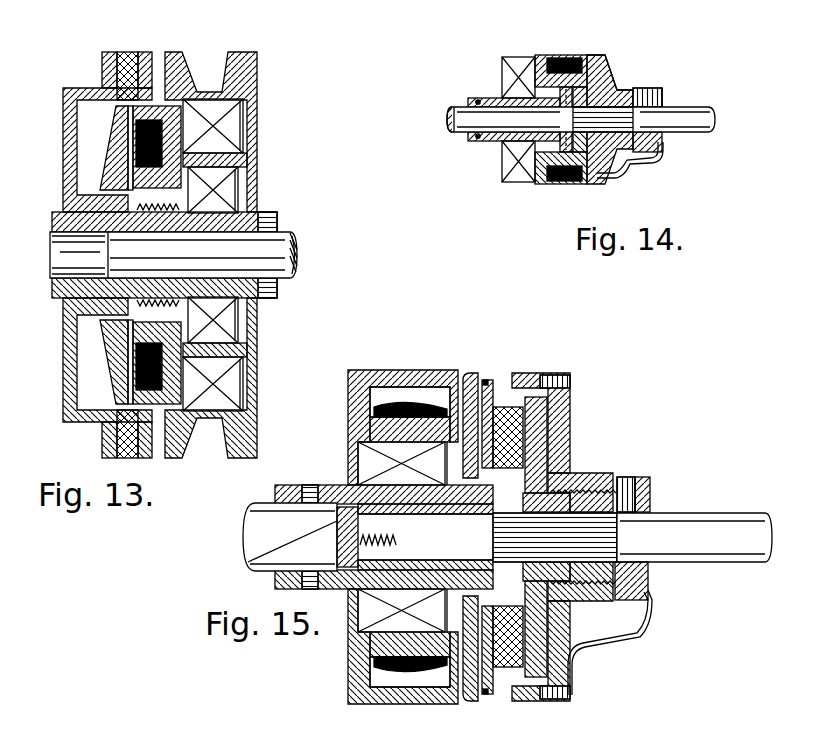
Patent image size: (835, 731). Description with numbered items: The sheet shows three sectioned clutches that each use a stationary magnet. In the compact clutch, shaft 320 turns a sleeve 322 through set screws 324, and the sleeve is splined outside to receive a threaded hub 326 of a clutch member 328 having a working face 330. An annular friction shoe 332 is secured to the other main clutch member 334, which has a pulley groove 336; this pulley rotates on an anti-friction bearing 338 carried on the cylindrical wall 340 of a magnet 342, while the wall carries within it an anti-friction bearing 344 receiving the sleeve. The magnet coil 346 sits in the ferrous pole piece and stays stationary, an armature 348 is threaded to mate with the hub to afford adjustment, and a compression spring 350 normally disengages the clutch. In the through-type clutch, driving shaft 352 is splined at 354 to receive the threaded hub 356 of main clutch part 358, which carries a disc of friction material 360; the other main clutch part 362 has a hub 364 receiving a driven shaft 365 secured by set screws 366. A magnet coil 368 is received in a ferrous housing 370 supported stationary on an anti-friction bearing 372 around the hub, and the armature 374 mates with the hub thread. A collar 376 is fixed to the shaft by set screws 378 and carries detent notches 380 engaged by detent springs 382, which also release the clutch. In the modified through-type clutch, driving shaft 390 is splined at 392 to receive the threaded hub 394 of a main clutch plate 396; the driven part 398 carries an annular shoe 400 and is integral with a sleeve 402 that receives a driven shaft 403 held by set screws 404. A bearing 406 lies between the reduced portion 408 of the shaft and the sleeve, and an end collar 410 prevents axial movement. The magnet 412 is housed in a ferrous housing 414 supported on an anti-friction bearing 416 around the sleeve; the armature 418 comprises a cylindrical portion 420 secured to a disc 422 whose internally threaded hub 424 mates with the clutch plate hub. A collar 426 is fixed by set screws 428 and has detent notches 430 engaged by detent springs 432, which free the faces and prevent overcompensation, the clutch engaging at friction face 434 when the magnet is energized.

In FIG. 13, the shaft 320 is at (290, 242).
In FIG. 13, the sleeve 322 is at (52, 232).
In FIG. 13, the set screws 324 is at (270, 212).
In FIG. 13, the threaded hub 326 is at (90, 205).
In FIG. 13, the clutch member 328 is at (63, 120).
In FIG. 13, the working face 330 is at (110, 52).
In FIG. 13, the annular friction shoe 332 is at (128, 52).
In FIG. 13, the main clutch member 334 is at (142, 54).
In FIG. 13, the pulley groove 336 is at (237, 52).
In FIG. 13, the anti-friction bearing 338 is at (233, 120).
In FIG. 13, the cylindrical wall 340 is at (205, 158).
In FIG. 13, the magnet 342 is at (165, 110).
In FIG. 13, the anti-friction bearing 344 is at (232, 190).
In FIG. 13, the magnet coil 346 is at (140, 130).
In FIG. 13, the armature 348 is at (108, 145).
In FIG. 13, the compression spring 350 is at (140, 215).
In FIG. 14, the driving shaft 352 is at (690, 128).
In FIG. 14, the splines 354 is at (612, 110).
In FIG. 14, the threaded hub 356 is at (610, 85).
In FIG. 14, the main clutch part 358 is at (545, 184).
In FIG. 14, the disc of friction material 360 is at (505, 137).
In FIG. 14, the main clutch part 362 is at (543, 58).
In FIG. 14, the hub 364 is at (490, 98).
In FIG. 14, the driven shaft 365 is at (450, 128).
In FIG. 14, the set screws 366 is at (473, 100).
In FIG. 14, the magnet coil 368 is at (530, 150).
In FIG. 14, the ferrous housing 370 is at (573, 184).
In FIG. 14, the anti-friction bearing 372 is at (502, 70).
In FIG. 14, the armature 374 is at (600, 56).
In FIG. 14, the collar 376 is at (645, 163).
In FIG. 14, the set screws 378 is at (652, 92).
In FIG. 14, the detent notches 380 is at (664, 90).
In FIG. 14, the detent springs 382 is at (622, 166).
In FIG. 15, the driving shaft 390 is at (715, 548).
In FIG. 15, the splines 392 is at (592, 530).
In FIG. 15, the threaded hub 394 is at (588, 492).
In FIG. 15, the main clutch plate 396 is at (540, 410).
In FIG. 15, the driven part 398 is at (488, 381).
In FIG. 15, the annular shoe 400 is at (500, 408).
In FIG. 15, the sleeve 402 is at (327, 486).
In FIG. 15, the driven shaft 403 is at (245, 530).
In FIG. 15, the set screws 404 is at (306, 485).
In FIG. 15, the bearing 406 is at (407, 508).
In FIG. 15, the reduced portion 408 is at (345, 510).
In FIG. 15, the end collar 410 is at (358, 538).
In FIG. 15, the magnet 412 is at (400, 393).
In FIG. 15, the ferrous housing 414 is at (373, 372).
In FIG. 15, the anti-friction bearing 416 is at (363, 455).
In FIG. 15, the armature 418 is at (470, 373).
In FIG. 15, the cylindrical portion 420 is at (520, 373).
In FIG. 15, the disc 422 is at (555, 376).
In FIG. 15, the internally threaded hub 424 is at (578, 473).
In FIG. 15, the collar 426 is at (630, 598).
In FIG. 15, the set screws 428 is at (645, 478).
In FIG. 15, the detent notches 430 is at (650, 493).
In FIG. 15, the detent springs 432 is at (614, 648).
In FIG. 15, the friction face 434 is at (525, 690).